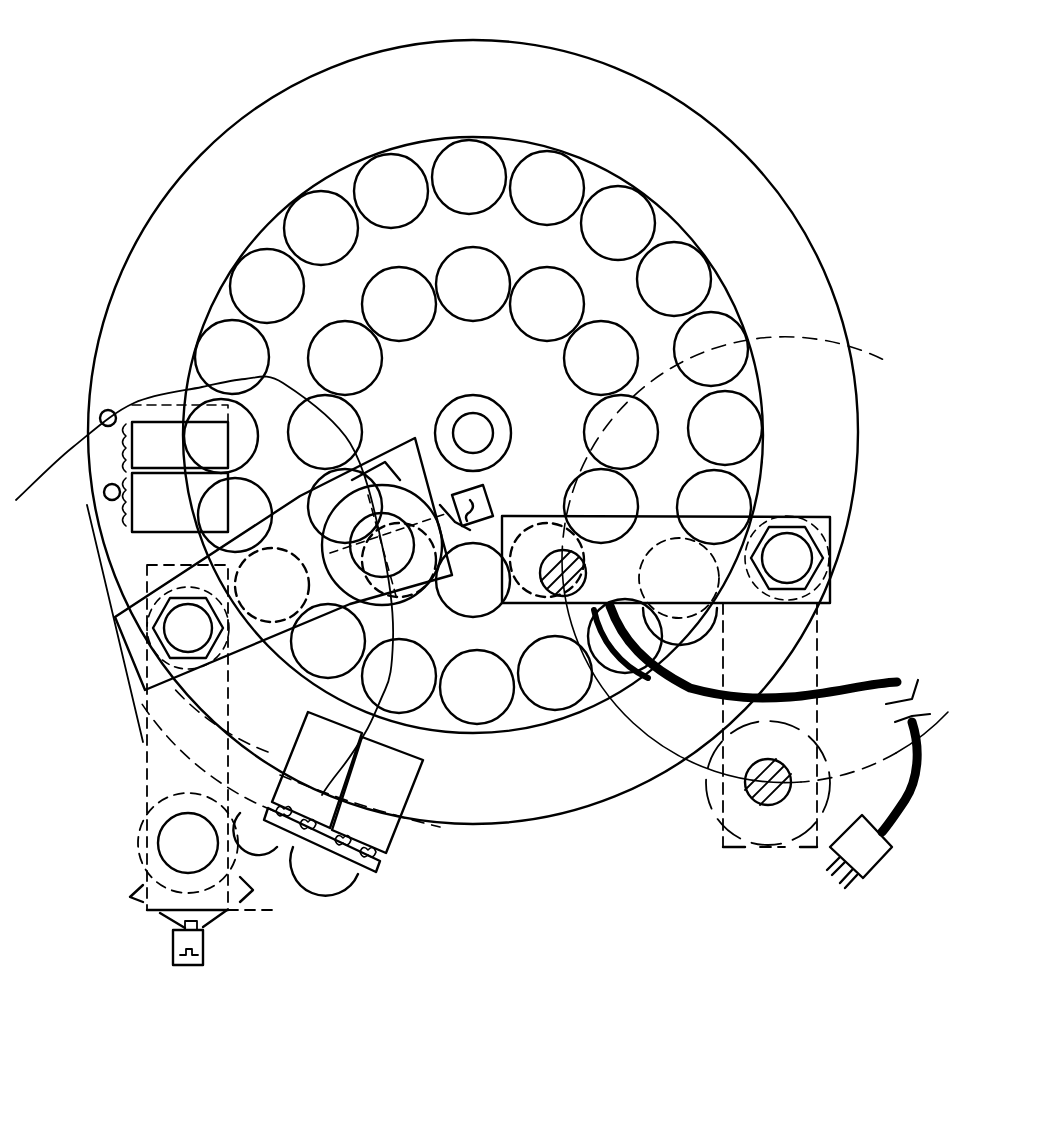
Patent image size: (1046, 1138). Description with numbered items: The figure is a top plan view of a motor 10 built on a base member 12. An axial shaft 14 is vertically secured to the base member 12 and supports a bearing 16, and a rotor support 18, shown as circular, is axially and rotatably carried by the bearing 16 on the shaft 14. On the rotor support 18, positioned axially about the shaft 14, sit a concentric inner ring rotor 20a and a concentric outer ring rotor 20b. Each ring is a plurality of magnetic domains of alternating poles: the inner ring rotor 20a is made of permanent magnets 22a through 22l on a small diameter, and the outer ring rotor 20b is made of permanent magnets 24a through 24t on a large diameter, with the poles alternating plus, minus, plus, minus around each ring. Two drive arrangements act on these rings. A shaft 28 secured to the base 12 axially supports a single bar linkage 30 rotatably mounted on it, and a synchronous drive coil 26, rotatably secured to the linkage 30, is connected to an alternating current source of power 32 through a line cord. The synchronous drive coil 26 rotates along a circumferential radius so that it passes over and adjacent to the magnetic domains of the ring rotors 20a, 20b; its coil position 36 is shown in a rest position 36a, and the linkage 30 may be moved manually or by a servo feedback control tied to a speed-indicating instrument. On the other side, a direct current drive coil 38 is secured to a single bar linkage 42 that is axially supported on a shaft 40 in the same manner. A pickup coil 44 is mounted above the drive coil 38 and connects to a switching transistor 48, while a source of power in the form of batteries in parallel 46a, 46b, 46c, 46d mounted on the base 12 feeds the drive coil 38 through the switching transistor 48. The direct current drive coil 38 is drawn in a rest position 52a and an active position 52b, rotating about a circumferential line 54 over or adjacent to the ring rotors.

The motor 10 is at (716, 68).
The base member 12 is at (740, 140).
The axial shaft 14 is at (482, 418).
The bearing 16 is at (500, 440).
The rotor support 18 is at (558, 478).
The concentric inner ring rotor 20a is at (446, 268).
The concentric outer ring rotor 20b is at (388, 246).
The permanent magnet 22a is at (473, 323).
The permanent magnet 22l is at (412, 343).
The permanent magnet 24a is at (471, 163).
The permanent magnet 24t is at (389, 173).
The synchronous drive coil 26 is at (723, 815).
The shaft 28 is at (805, 563).
The single bar linkage 30 is at (828, 666).
The alternating current source of power 32 is at (863, 878).
The drive arm 36 is at (527, 616).
The rest position 36a is at (769, 863).
The direct current drive coil 38 is at (132, 850).
The shaft 40 is at (180, 645).
The single bar linkage 42 is at (230, 695).
The pickup coil 44 is at (250, 875).
The battery 46a is at (164, 469).
The battery 46b is at (166, 502).
The battery 46c is at (317, 770).
The battery 46d is at (377, 795).
The switching transistor 48 is at (203, 960).
The rest position 52a is at (156, 932).
The active position 52b is at (430, 426).
The circumferential line 54 is at (375, 726).